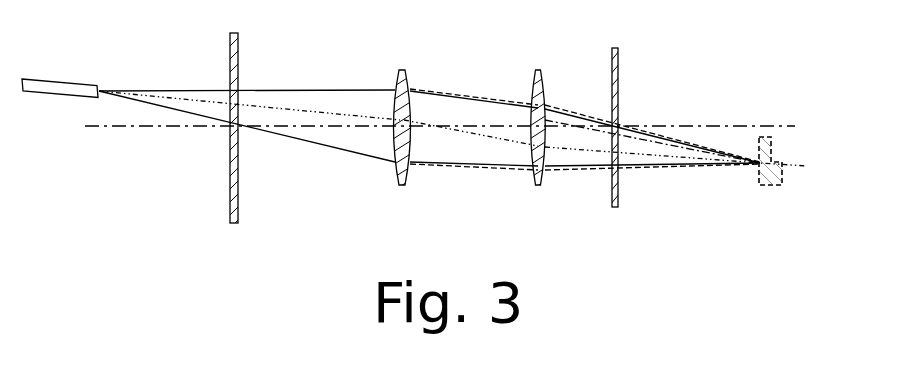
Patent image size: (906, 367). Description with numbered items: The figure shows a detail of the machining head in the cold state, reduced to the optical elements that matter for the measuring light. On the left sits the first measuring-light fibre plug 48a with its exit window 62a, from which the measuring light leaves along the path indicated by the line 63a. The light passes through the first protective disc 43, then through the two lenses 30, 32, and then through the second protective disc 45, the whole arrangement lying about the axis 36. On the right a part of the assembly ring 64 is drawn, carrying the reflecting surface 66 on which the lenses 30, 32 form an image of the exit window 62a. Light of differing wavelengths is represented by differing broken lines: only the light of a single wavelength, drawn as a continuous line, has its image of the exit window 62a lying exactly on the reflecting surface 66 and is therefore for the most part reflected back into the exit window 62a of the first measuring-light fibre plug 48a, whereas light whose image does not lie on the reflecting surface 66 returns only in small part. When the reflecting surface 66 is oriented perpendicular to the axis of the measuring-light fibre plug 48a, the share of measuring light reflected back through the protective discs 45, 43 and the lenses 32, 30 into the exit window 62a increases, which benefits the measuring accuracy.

The first measuring-light fibre plug 48a is at (70, 90).
The exit window 62a is at (101, 88).
The marginal ray 63a is at (288, 90).
The protective disc 43 is at (229, 70).
The lens 30 is at (398, 81).
The lens 32 is at (543, 88).
The protective disc 45 is at (619, 80).
The optical axis 36 is at (779, 126).
The reflecting surface 66 is at (758, 170).
The assembly ring 64 is at (773, 188).